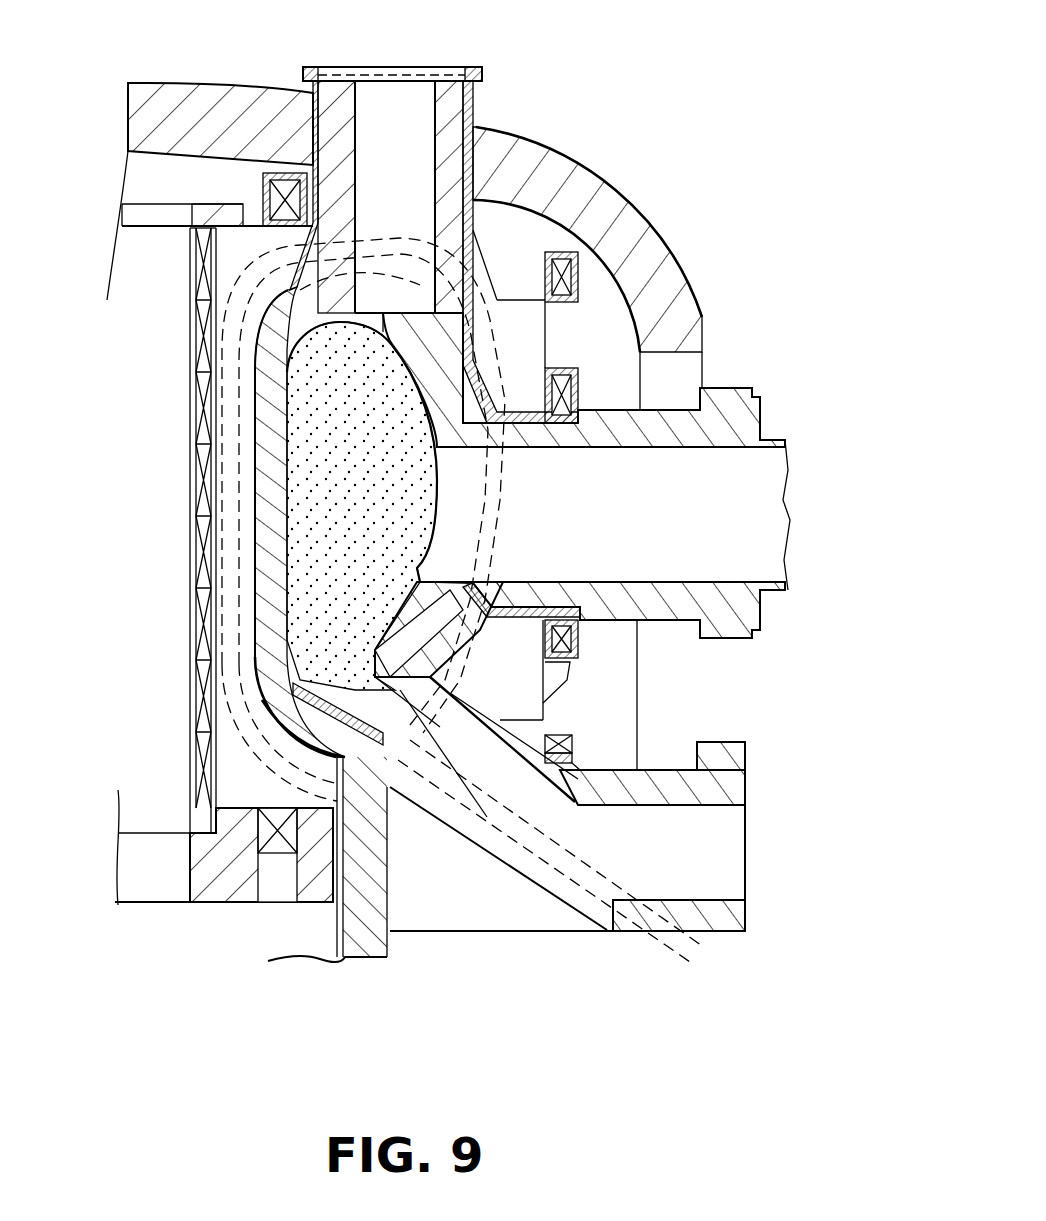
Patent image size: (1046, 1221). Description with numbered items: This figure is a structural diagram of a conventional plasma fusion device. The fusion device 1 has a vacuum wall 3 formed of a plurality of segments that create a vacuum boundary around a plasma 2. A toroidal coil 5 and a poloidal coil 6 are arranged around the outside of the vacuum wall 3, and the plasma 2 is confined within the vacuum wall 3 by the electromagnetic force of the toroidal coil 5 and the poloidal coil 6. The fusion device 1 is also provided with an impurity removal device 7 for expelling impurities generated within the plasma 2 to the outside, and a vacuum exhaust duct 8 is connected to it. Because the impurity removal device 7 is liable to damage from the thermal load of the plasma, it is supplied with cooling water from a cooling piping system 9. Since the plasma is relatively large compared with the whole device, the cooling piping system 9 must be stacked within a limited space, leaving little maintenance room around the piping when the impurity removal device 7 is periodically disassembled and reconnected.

The fusion device 1 is at (495, 112).
The plasma 2 is at (478, 345).
The vacuum wall 3 is at (385, 272).
The toroidal coil 5 is at (510, 367).
The poloidal coil 6 is at (562, 262).
The impurity removal device 7 is at (300, 713).
The vacuum exhaust duct 8 is at (530, 810).
The cooling piping system 9 is at (722, 925).